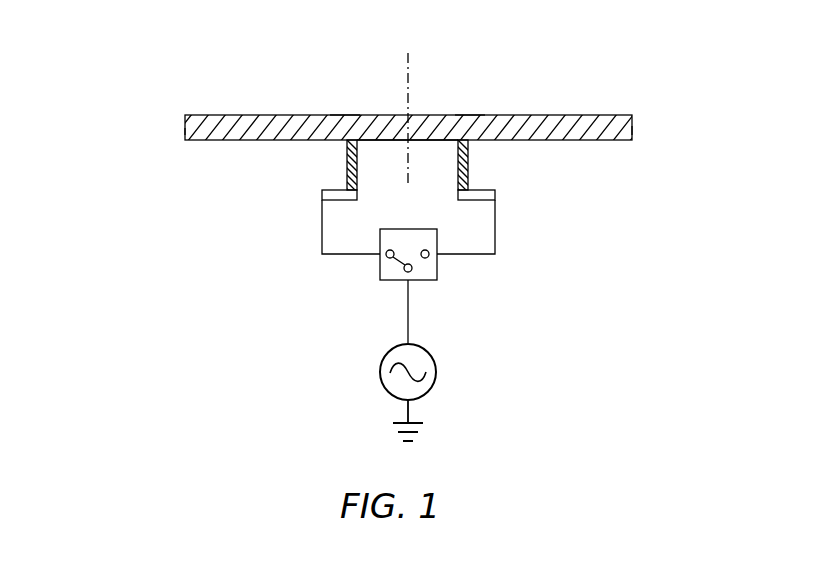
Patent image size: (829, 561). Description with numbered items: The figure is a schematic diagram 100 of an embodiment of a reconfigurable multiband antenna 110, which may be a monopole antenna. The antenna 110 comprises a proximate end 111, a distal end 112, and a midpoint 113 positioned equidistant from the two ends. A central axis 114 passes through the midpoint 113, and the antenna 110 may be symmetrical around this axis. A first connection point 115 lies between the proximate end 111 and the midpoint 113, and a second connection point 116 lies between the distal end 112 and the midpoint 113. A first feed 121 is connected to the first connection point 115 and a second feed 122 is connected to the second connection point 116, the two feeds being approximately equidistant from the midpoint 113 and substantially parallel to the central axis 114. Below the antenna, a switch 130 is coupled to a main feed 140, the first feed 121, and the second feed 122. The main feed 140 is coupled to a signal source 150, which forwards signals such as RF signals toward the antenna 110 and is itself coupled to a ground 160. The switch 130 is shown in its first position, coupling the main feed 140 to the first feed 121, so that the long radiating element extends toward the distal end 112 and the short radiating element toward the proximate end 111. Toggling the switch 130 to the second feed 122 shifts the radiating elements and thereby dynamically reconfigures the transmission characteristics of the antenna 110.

The schematic diagram 100 is at (127, 33).
The reconfigurable multiband antenna 110 is at (597, 63).
The proximate end 111 is at (185, 128).
The distal end 112 is at (632, 126).
The midpoint 113 is at (408, 141).
The central axis 114 is at (408, 73).
The first connection point 115 is at (346, 115).
The second connection point 116 is at (470, 115).
The first feed 121 is at (347, 165).
The second feed 122 is at (468, 165).
The switch 130 is at (437, 265).
The main feed 140 is at (408, 310).
The signal source 150 is at (430, 350).
The ground 160 is at (410, 444).